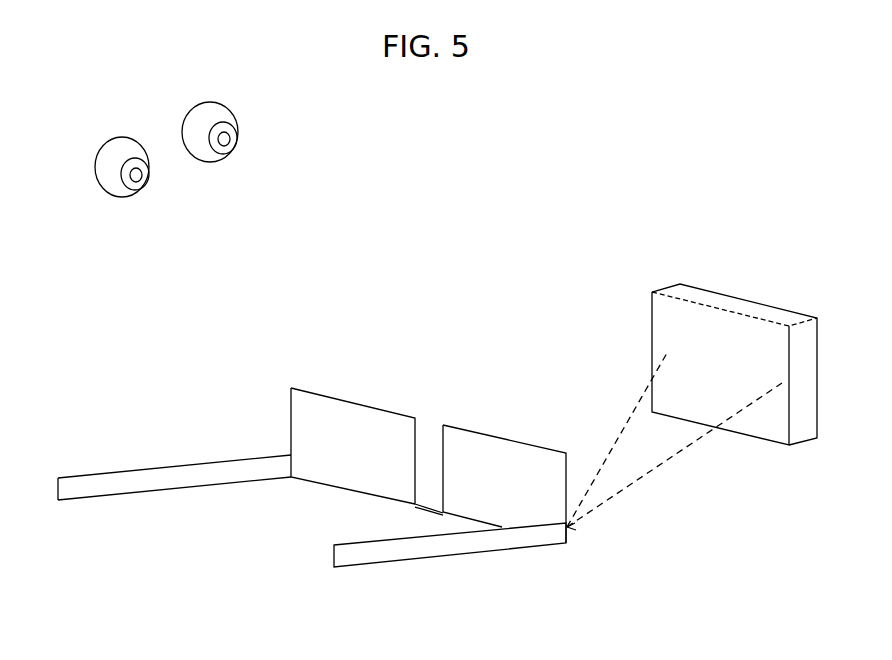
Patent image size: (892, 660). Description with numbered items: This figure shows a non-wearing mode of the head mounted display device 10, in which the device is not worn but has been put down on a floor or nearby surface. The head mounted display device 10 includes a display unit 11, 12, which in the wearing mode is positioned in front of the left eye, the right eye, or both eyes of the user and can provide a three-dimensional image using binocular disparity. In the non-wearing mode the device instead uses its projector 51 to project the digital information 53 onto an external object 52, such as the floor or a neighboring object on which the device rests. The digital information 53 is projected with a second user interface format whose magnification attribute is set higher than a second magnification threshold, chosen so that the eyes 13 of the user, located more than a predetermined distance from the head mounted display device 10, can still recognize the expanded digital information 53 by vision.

The head mounted display device 10 is at (350, 555).
The display unit 11 is at (496, 450).
The display unit 12 is at (358, 418).
The eyes of the user 13 is at (133, 150).
The projector 51 is at (570, 530).
The external object 52 is at (773, 427).
The digital information 53 is at (668, 353).